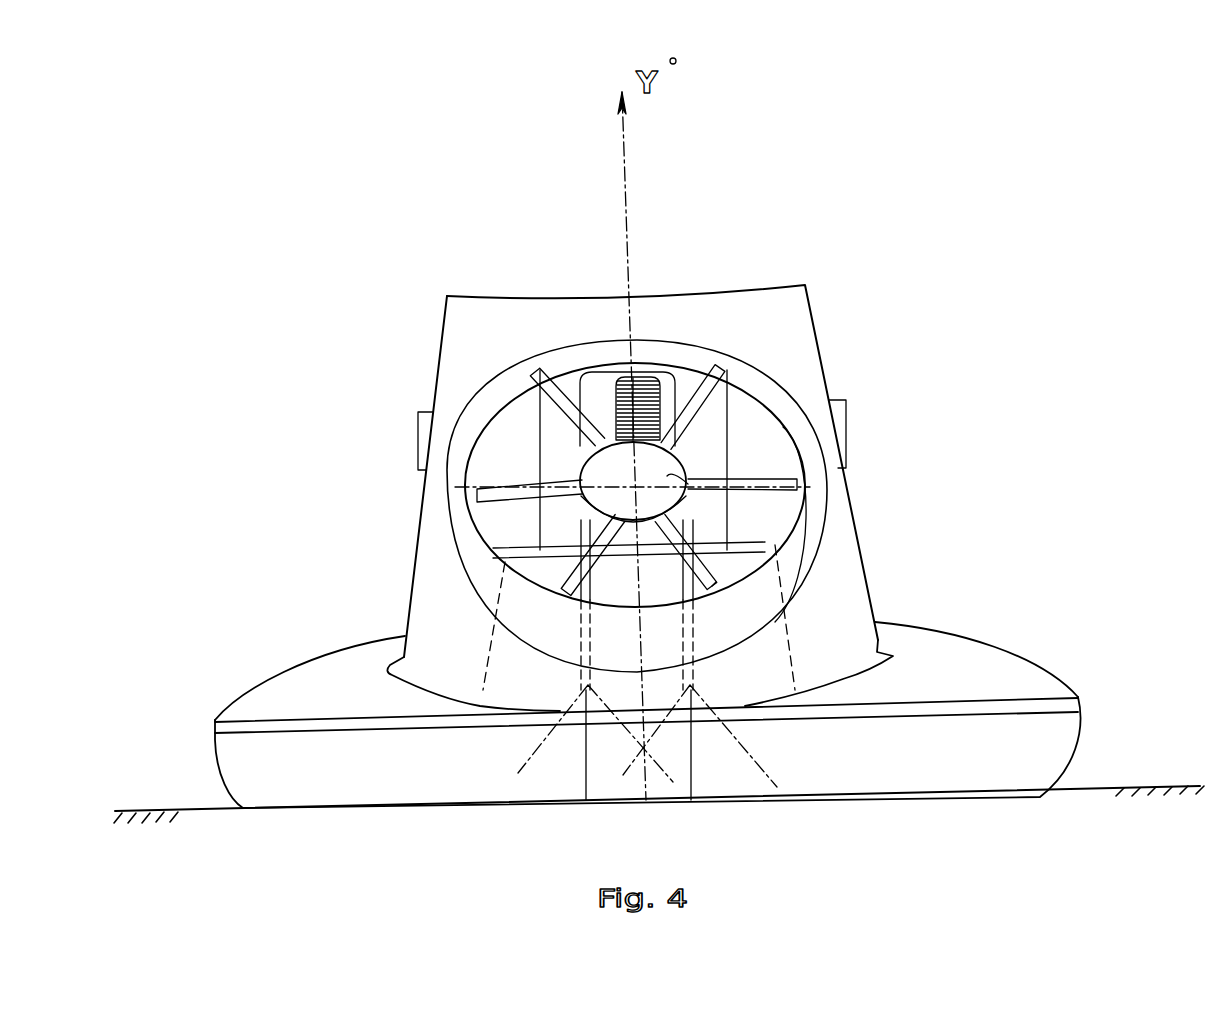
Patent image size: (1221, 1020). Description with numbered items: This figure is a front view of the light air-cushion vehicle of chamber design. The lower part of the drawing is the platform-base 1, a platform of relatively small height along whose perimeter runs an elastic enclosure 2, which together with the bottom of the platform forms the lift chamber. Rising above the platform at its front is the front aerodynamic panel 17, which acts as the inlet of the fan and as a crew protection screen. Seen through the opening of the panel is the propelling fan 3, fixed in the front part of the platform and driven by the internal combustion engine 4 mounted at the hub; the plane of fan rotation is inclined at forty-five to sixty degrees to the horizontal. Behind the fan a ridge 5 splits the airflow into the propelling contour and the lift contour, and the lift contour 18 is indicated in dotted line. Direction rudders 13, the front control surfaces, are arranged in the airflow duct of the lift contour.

The platform-base 1 is at (1032, 677).
The elastic enclosure 2 is at (1077, 747).
The propelling fan 3 is at (688, 484).
The internal combustion engine 4 is at (640, 398).
The ridge 5 is at (704, 570).
The direction rudders 13 is at (588, 698).
The front aerodynamic panel 17 is at (783, 335).
The lift contour 18 is at (793, 678).